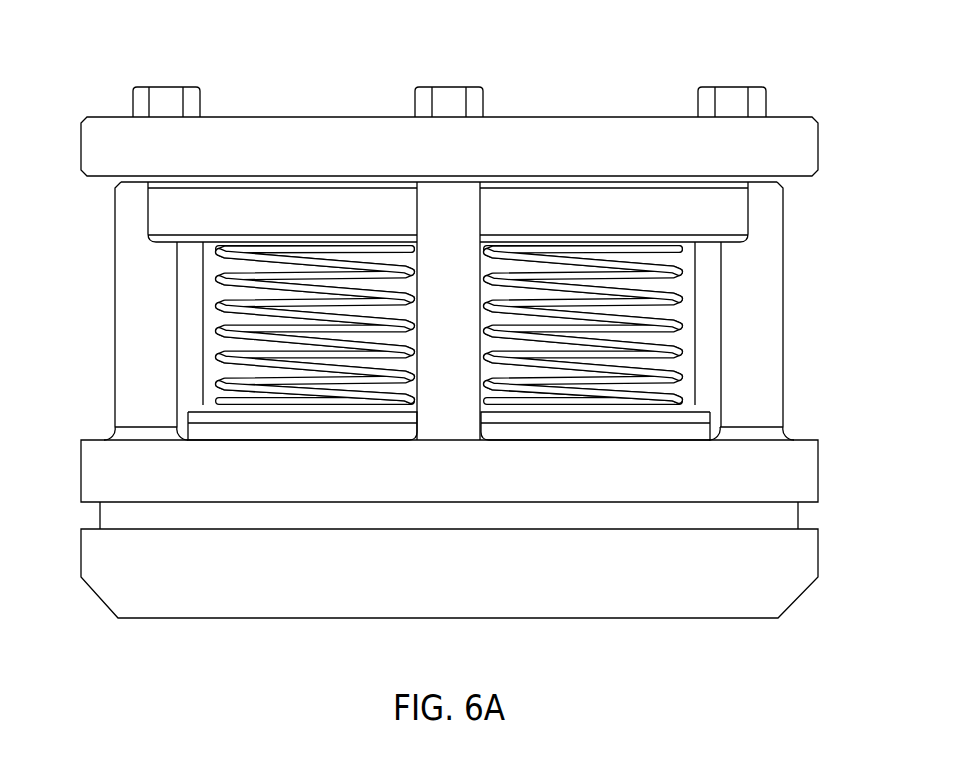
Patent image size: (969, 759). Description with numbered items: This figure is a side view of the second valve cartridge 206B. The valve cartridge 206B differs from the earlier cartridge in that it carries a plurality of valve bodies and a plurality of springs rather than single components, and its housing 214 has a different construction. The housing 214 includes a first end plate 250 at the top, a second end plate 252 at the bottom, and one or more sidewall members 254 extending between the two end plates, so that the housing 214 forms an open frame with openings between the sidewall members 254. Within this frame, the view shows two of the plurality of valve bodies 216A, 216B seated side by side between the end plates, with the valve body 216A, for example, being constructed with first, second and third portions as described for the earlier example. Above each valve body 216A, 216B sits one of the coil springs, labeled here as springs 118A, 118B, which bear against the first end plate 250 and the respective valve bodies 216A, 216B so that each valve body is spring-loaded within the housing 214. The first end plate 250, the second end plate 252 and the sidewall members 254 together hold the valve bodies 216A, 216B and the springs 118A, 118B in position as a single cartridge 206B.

The valve cartridge 206B is at (141, 47).
The housing 214 is at (548, 143).
The first end plate 250 is at (449, 102).
The first spring 118A is at (217, 305).
The second spring 118B is at (683, 307).
The valve body 216A is at (217, 420).
The valve body 216B is at (680, 418).
The sidewall member 254 is at (752, 340).
The second end plate 252 is at (588, 550).